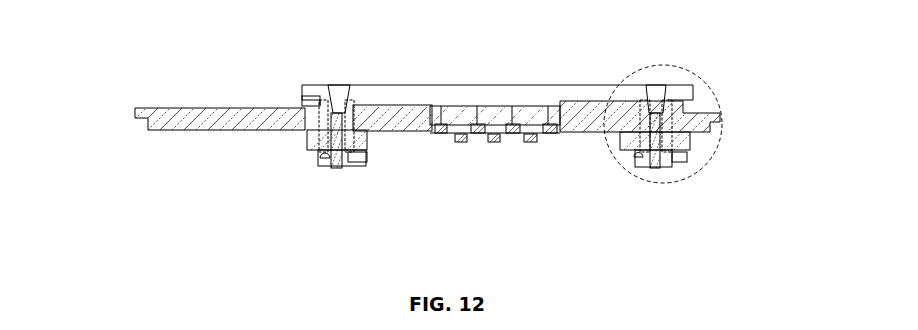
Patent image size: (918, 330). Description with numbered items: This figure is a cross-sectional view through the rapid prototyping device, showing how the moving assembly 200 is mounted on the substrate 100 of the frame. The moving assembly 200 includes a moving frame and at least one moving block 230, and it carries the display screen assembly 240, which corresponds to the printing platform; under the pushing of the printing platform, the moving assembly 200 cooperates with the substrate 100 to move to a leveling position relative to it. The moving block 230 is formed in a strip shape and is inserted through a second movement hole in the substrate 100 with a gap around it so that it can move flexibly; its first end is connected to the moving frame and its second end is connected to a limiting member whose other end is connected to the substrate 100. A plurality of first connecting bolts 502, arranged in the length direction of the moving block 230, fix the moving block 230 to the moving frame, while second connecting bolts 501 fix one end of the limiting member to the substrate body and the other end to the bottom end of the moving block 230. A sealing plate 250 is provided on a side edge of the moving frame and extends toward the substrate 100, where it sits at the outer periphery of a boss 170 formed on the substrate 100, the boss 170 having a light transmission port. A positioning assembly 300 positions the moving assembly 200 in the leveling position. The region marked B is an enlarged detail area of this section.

The substrate 100 is at (190, 115).
The moving assembly 200 is at (470, 92).
The sealing plate 250 is at (302, 102).
The boss 170 is at (313, 107).
The positioning assembly 300 is at (325, 153).
The moving block 230 is at (462, 115).
The first connecting bolt 502 is at (546, 130).
The second connecting bolt 501 is at (497, 138).
The display screen assembly 240 is at (530, 324).
The detail region B is at (705, 165).